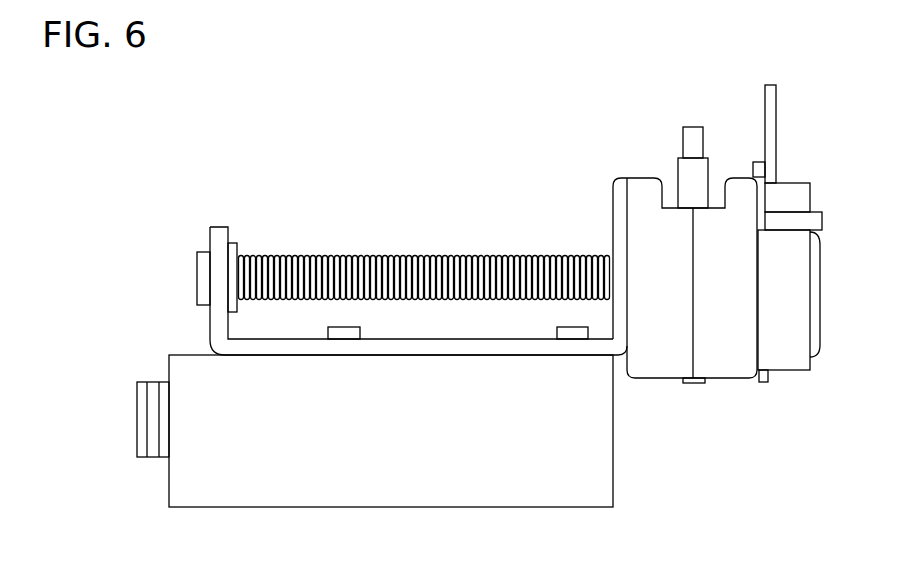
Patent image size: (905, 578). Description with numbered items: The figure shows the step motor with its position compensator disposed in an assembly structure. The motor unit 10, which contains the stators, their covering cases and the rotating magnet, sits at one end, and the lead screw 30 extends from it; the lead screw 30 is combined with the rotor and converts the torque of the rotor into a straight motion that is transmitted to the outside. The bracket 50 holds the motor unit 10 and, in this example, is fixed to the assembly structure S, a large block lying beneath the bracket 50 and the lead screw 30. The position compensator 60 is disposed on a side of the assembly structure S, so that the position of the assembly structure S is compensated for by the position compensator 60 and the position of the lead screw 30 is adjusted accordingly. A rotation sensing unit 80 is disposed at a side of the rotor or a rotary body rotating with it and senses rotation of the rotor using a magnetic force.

The motor unit 10 is at (727, 362).
The lead screw 30 is at (373, 255).
The bracket 50 is at (287, 347).
The position compensator 60 is at (155, 393).
The rotation sensing unit 80 is at (765, 113).
The assembly structure S is at (587, 456).